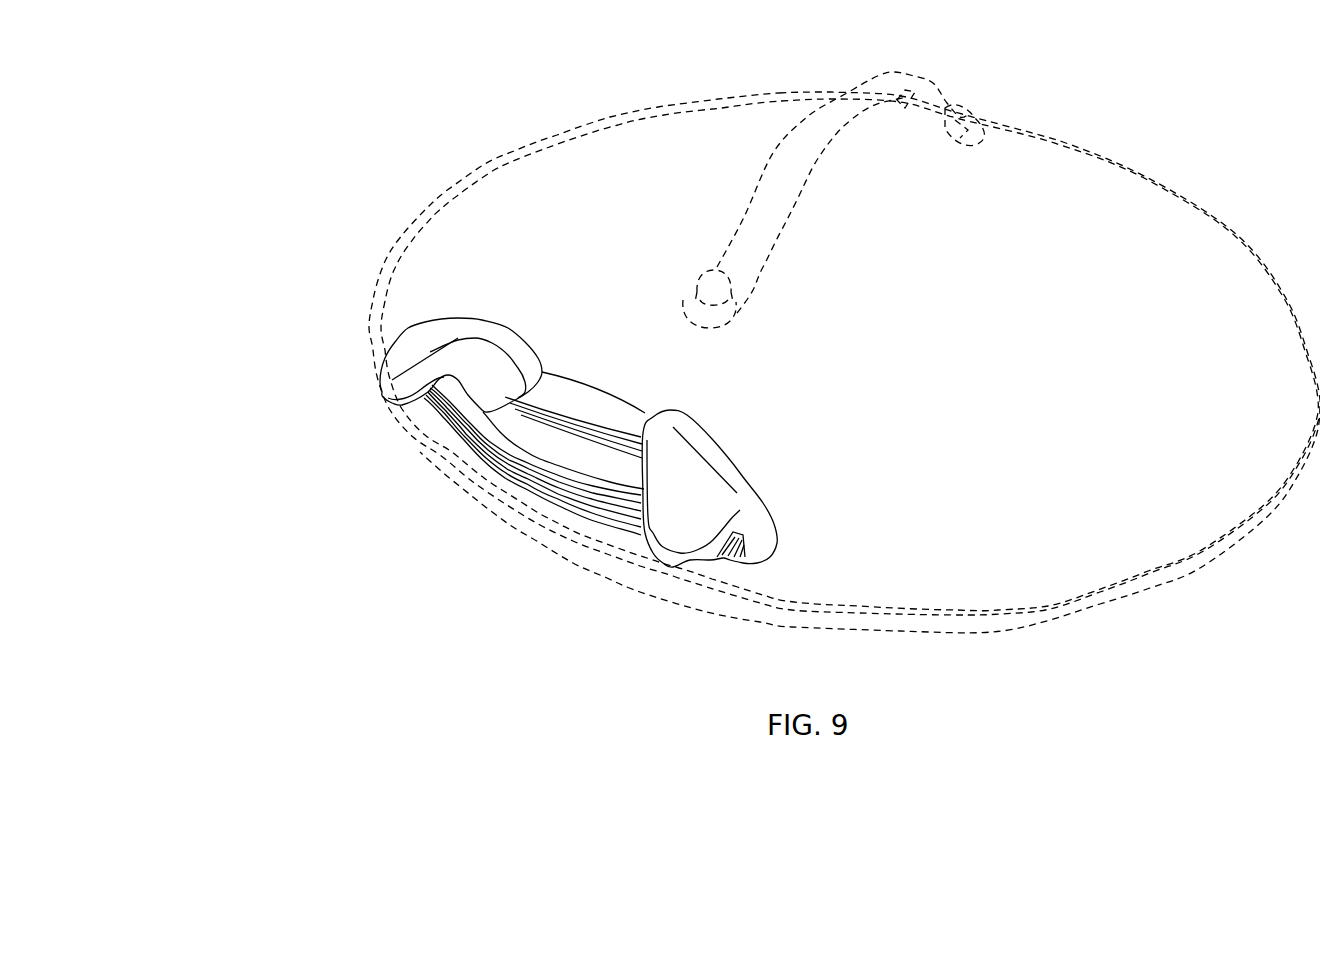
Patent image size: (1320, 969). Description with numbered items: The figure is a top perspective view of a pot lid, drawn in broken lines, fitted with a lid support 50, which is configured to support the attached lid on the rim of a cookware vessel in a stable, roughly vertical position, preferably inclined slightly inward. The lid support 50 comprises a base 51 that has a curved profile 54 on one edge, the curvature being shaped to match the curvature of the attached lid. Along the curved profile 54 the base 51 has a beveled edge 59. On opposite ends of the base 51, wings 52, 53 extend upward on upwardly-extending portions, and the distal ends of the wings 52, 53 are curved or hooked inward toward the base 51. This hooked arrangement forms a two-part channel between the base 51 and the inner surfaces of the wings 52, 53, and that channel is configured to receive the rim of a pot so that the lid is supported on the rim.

The lid support 50 is at (582, 380).
The base 51 is at (560, 428).
The wing 52 is at (412, 348).
The wing 53 is at (688, 517).
The curved profile 54 is at (557, 500).
The beveled edge 59 is at (530, 470).